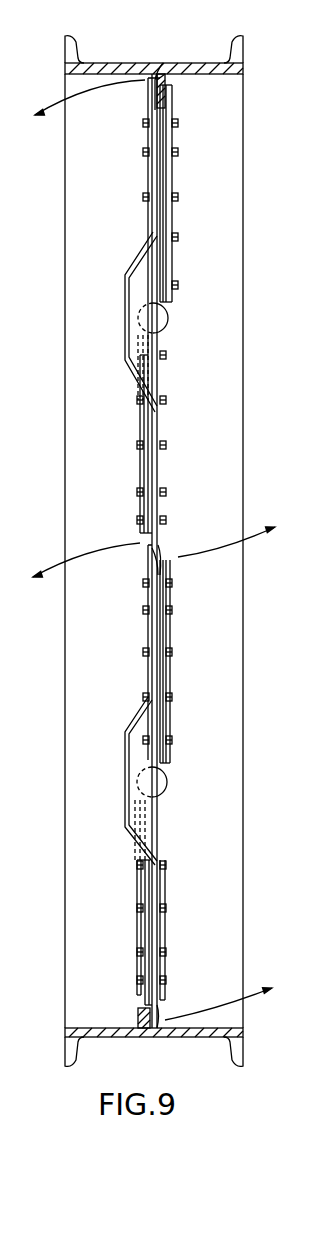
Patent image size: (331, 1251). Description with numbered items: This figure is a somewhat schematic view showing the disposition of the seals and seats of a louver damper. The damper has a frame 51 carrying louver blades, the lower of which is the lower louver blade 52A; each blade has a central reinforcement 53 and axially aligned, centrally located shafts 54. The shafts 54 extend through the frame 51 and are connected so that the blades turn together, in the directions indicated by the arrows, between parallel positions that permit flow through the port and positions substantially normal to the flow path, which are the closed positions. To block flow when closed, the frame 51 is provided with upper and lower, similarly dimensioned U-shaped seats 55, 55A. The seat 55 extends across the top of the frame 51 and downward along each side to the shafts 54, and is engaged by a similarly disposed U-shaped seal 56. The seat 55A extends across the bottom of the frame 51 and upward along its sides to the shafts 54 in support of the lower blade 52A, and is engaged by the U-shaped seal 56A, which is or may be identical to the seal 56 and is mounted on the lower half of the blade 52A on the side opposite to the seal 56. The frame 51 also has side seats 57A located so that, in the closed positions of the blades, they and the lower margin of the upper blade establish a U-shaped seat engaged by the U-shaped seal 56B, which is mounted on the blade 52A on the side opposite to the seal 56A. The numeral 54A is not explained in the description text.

The frame 51 is at (243, 66).
The lower louver blade 52A is at (160, 888).
The central reinforcement 53 is at (123, 272).
The shaft 54 is at (168, 318).
The lower side strip 54A is at (135, 888).
The upper U-shaped seat 55 is at (163, 72).
The lower U-shaped seat 55A is at (137, 1018).
The U-shaped seal 56 is at (165, 178).
The U-shaped seal 56A is at (143, 1000).
The U-shaped seal 56B is at (160, 562).
The side seat 57A is at (172, 640).